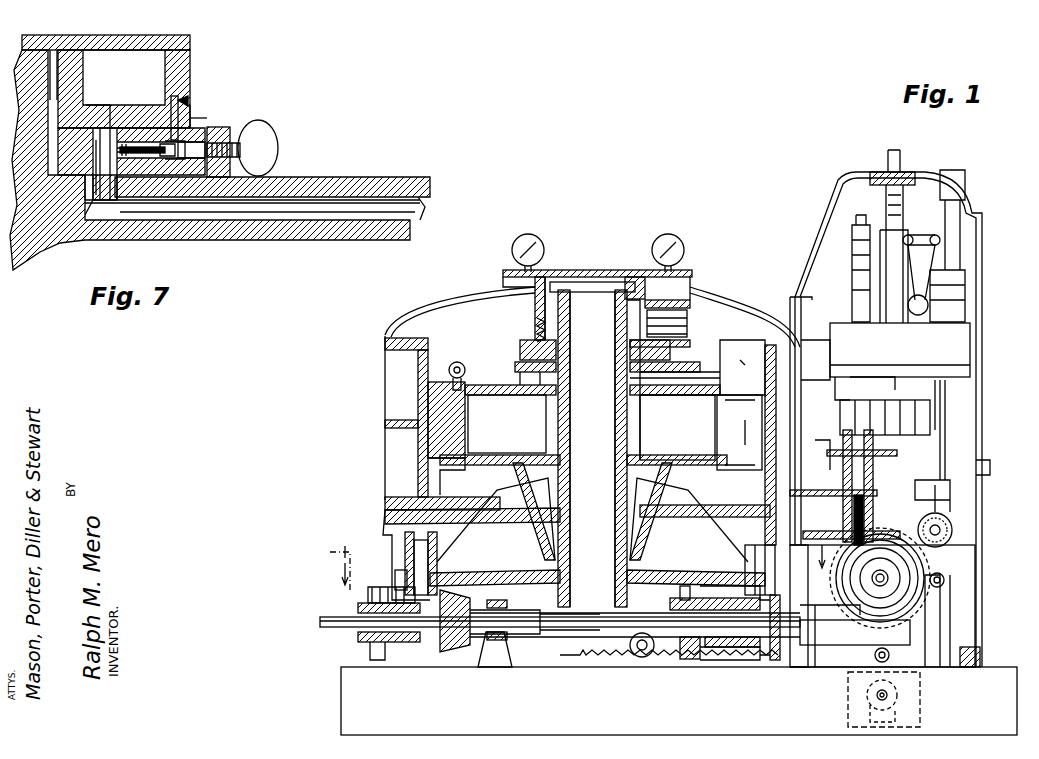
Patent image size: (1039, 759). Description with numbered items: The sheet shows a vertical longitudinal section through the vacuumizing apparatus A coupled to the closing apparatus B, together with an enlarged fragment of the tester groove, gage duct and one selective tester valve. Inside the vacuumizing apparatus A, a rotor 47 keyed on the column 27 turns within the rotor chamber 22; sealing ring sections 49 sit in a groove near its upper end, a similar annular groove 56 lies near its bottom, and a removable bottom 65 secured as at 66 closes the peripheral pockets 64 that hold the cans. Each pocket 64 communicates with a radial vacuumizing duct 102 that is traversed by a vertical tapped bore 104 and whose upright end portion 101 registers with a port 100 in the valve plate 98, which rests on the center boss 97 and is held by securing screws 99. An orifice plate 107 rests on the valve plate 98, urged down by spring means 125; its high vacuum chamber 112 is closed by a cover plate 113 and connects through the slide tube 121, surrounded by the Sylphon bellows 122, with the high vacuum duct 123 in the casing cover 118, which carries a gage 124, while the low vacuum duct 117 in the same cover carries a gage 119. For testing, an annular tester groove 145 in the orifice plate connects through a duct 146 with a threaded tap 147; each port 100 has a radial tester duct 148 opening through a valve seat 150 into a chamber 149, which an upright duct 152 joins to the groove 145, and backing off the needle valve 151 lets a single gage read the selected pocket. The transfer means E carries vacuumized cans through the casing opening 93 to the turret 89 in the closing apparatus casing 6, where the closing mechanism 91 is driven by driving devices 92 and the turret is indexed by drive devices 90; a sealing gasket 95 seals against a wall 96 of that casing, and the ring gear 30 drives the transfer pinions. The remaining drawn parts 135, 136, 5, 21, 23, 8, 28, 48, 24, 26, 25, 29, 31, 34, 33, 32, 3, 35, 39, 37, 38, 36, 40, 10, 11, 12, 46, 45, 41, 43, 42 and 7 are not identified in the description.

In FIG. 7, the cover plate 113 is at (105, 20).
In FIG. 1, the cover plate 113 is at (692, 360).
In FIG. 7, the high vacuum chamber 112 is at (130, 50).
In FIG. 7, the orifice plate 107 is at (183, 105).
In FIG. 7, the duct 146 is at (180, 100).
In FIG. 7, the threaded tap 147 is at (190, 110).
In FIG. 7, the tester groove 145 is at (196, 120).
In FIG. 7, the upright duct 152 is at (225, 125).
In FIG. 7, the needle valve 151 is at (240, 138).
In FIG. 7, the bore 135 is at (98, 128).
In FIG. 7, the port 100 is at (118, 145).
In FIG. 7, the passage 136 is at (108, 120).
In FIG. 7, the radial tester duct 148 is at (108, 190).
In FIG. 7, the valve seat 150 is at (130, 160).
In FIG. 7, the valve plate 98 is at (170, 158).
In FIG. 1, the valve plate 98 is at (516, 366).
In FIG. 7, the chamber 149 is at (192, 160).
In FIG. 7, the center boss 97 is at (228, 165).
In FIG. 1, the center boss 97 is at (505, 396).
In FIG. 7, the vacuumizing duct 102 is at (280, 203).
In FIG. 1, the vacuumizing duct 102 is at (690, 380).
In FIG. 7, the rotor 47 is at (360, 190).
In FIG. 1, the rotor 47 is at (428, 396).
In FIG. 7, the upright end portion 101 is at (88, 205).
In FIG. 1, the upright end portion 101 is at (660, 396).
In FIG. 1, the base 5 is at (665, 722).
In FIG. 1, the gage 119 is at (538, 240).
In FIG. 1, the gage 124 is at (678, 240).
In FIG. 1, the casing cover 118 is at (415, 318).
In FIG. 1, the vacuumizing apparatus A is at (385, 333).
In FIG. 1, the high vacuum duct 123 is at (715, 300).
In FIG. 1, the slide tube 121 is at (680, 305).
In FIG. 1, the low vacuum duct 117 is at (520, 300).
In FIG. 1, the wall 21 is at (418, 366).
In FIG. 1, the rotor chamber 22 is at (418, 424).
In FIG. 1, the removable bottom 65 is at (430, 460).
In FIG. 1, the flange 23 is at (420, 498).
In FIG. 1, the casing 8 is at (383, 515).
In FIG. 1, the tapped bore 104 is at (520, 348).
In FIG. 1, the spring means 125 is at (537, 328).
In FIG. 1, the securing screws 99 is at (535, 390).
In FIG. 1, the securing means 66 is at (470, 441).
In FIG. 1, the shaft 28 is at (584, 305).
In FIG. 1, the column 27 is at (631, 443).
In FIG. 1, the Sylphon bellows 122 is at (690, 328).
In FIG. 1, the valve 48 is at (765, 350).
In FIG. 1, the sealing ring sections 49 is at (770, 348).
In FIG. 1, the peripheral pockets 64 is at (702, 425).
In FIG. 1, the transfer means E is at (765, 433).
In FIG. 1, the plate 24 is at (488, 470).
In FIG. 1, the annular groove 56 is at (750, 492).
In FIG. 1, the cone 26 is at (552, 511).
In FIG. 1, the disc 25 is at (462, 512).
In FIG. 1, the disc 29 is at (665, 575).
In FIG. 1, the bolt 31 is at (688, 586).
In FIG. 1, the ring gear 30 is at (730, 585).
In FIG. 1, the bearing 34 is at (415, 540).
In FIG. 1, the spindle 33 is at (432, 545).
In FIG. 1, the gear 32 is at (398, 577).
In FIG. 1, the section line 3 is at (577, 567).
In FIG. 1, the gear 35 is at (372, 592).
In FIG. 1, the shaft 39 is at (340, 618).
In FIG. 1, the bearing 37 is at (398, 640).
In FIG. 1, the bearing 38 is at (365, 644).
In FIG. 1, the bevel gear 36 is at (448, 640).
In FIG. 1, the shaft 40 is at (588, 628).
In FIG. 1, the pedestal 10 is at (528, 660).
In FIG. 1, the spring 11 is at (626, 646).
In FIG. 1, the collar 12 is at (642, 657).
In FIG. 1, the bearing 46 is at (682, 660).
In FIG. 1, the bearing 45 is at (722, 660).
In FIG. 1, the flange 41 is at (775, 660).
In FIG. 1, the sealing gasket 95 is at (762, 548).
In FIG. 1, the wall 96 is at (810, 368).
In FIG. 1, the closing apparatus B is at (838, 204).
In FIG. 1, the closing mechanism 91 is at (870, 388).
In FIG. 1, the turret 89 is at (885, 430).
In FIG. 1, the closing apparatus casing 6 is at (990, 468).
In FIG. 1, the driving devices 92 is at (955, 522).
In FIG. 1, the drive devices 90 is at (890, 542).
In FIG. 1, the casing opening 93 is at (843, 538).
In FIG. 1, the arm 43 is at (945, 602).
In FIG. 1, the gearbox 42 is at (838, 635).
In FIG. 1, the support 7 is at (980, 657).